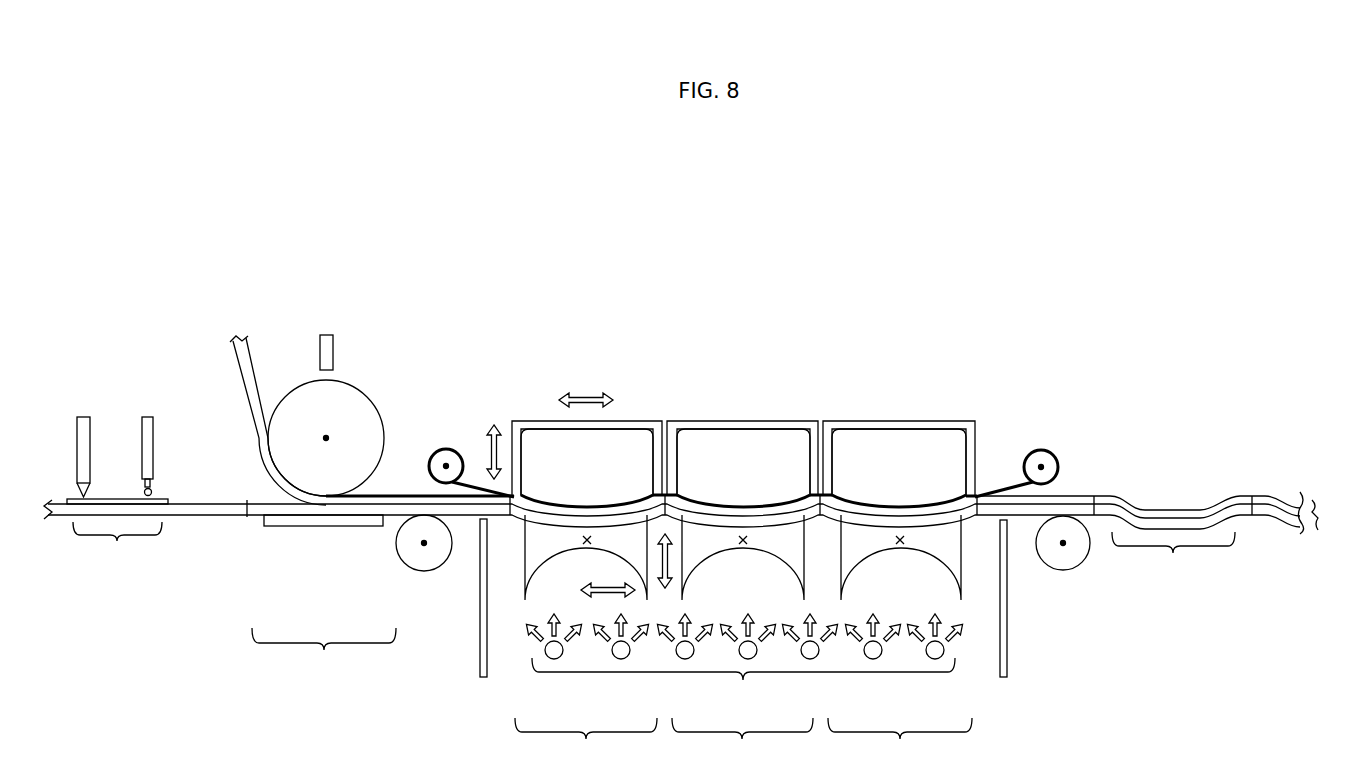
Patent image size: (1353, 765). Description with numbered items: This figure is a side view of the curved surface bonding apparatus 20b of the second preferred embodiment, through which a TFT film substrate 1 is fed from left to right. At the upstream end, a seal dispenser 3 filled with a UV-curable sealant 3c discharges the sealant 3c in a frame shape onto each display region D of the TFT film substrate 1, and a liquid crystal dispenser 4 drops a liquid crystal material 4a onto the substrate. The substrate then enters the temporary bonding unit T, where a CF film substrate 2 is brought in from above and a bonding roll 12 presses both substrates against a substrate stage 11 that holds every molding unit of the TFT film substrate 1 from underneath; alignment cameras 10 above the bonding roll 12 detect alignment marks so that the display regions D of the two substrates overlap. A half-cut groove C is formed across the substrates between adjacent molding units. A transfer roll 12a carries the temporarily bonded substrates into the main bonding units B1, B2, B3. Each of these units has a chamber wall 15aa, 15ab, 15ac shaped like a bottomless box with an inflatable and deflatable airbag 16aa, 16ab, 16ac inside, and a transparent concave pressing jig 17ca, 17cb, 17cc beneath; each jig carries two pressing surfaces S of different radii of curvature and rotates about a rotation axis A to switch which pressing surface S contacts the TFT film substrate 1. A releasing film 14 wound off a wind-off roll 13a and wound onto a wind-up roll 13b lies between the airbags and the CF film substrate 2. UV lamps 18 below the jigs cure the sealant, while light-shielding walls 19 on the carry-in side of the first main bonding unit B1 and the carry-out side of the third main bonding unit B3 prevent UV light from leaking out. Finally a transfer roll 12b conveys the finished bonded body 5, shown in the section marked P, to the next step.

The curved surface bonding apparatus 20b is at (516, 220).
The TFT film substrate 1 is at (247, 508).
The CF film substrate 2 is at (238, 373).
The seal dispenser 3 is at (78, 441).
The sealant 3c is at (120, 500).
The liquid crystal dispenser 4 is at (154, 441).
The liquid crystal material 4a is at (152, 494).
The bonded body 5 is at (1326, 516).
The alignment cameras 10 is at (333, 343).
The substrate stage 11 is at (313, 526).
The bonding roll 12 is at (363, 405).
The transfer roll 12a is at (424, 560).
The transfer roll 12b is at (1064, 560).
The wind-off roll 13a is at (440, 458).
The wind-up roll 13b is at (1047, 450).
The releasing film 14 is at (477, 485).
The chamber wall 15aa is at (548, 425).
The chamber wall 15ab is at (713, 425).
The chamber wall 15ac is at (866, 425).
The airbag 16aa is at (607, 452).
The airbag 16ab is at (772, 452).
The airbag 16ac is at (925, 452).
The concave pressing jig 17ca is at (562, 550).
The concave pressing jig 17cb is at (720, 550).
The concave pressing jig 17cc is at (873, 550).
The UV lamps 18 is at (744, 663).
The light-shielding walls 19 is at (480, 664).
The pressing surface S is at (578, 503).
The rotation axis A is at (588, 546).
The half-cut groove C is at (992, 508).
The display region D is at (117, 548).
The temporary bonding unit T is at (324, 654).
The product section P is at (1173, 556).
The first main bonding unit B1 is at (586, 741).
The second main bonding unit B2 is at (742, 741).
The third main bonding unit B3 is at (900, 741).